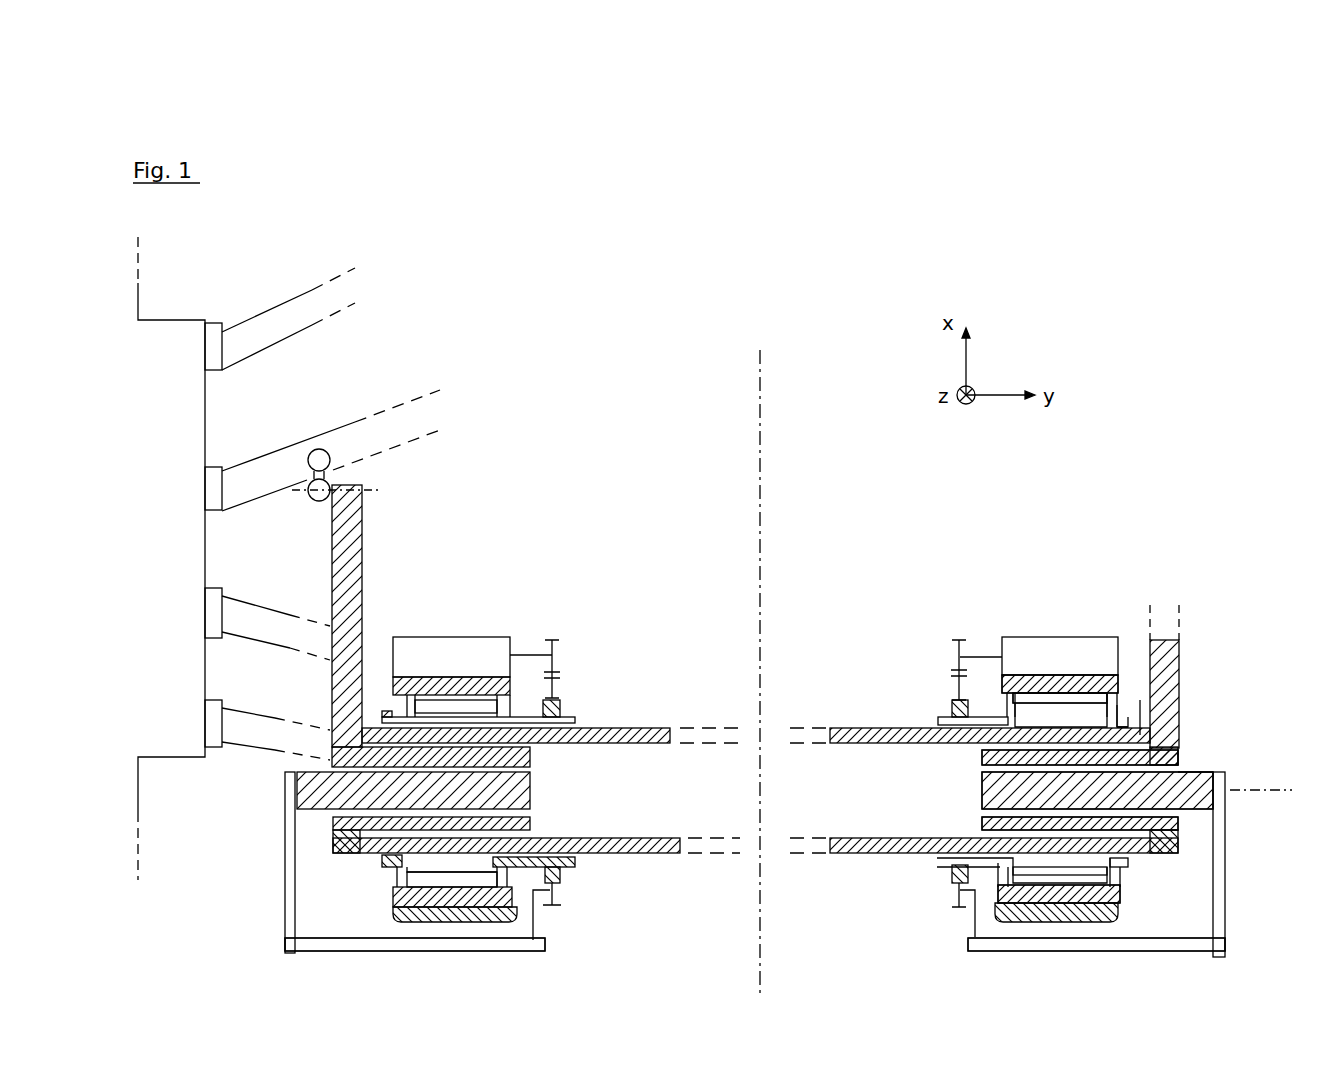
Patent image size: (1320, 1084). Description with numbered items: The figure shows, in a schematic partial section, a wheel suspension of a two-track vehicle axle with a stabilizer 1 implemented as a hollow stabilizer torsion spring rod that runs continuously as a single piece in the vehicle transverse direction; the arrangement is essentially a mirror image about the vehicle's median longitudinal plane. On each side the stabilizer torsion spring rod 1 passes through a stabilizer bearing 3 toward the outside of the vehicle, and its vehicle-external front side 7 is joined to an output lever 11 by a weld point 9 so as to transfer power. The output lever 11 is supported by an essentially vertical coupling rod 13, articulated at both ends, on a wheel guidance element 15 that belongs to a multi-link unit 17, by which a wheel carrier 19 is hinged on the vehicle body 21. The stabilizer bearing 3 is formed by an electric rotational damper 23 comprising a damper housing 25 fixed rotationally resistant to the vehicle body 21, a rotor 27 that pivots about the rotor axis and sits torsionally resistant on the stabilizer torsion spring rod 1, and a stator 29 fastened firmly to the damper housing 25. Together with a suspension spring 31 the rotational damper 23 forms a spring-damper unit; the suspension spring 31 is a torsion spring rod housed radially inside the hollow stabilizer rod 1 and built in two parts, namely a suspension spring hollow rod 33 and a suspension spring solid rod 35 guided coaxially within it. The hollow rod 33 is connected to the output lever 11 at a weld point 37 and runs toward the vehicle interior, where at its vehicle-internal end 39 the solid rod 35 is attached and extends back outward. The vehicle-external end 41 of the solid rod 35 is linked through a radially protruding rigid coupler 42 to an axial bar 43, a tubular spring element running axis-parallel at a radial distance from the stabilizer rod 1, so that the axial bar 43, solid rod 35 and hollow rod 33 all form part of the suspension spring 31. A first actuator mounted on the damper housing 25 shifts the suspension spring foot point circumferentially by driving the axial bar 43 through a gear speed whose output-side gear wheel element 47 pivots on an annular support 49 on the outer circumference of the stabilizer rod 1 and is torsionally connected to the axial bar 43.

The stabilizer 1 is at (597, 728).
The stabilizer bearing 3 is at (455, 922).
The front side external to the vehicle 7 is at (1136, 726).
The weld point 9 is at (1149, 732).
The output lever 11 is at (365, 543).
The coupling rod 13 is at (332, 467).
The wheel guidance element 15 is at (282, 450).
The multi-link unit 17 is at (448, 250).
The wheel carrier 19 is at (178, 320).
The vehicle body 21 is at (1112, 906).
The electric rotational damper 23 is at (1135, 606).
The damper housing 25 is at (1033, 684).
The rotor 27 is at (1082, 725).
The stator 29 is at (1057, 703).
The suspension spring 31 is at (937, 747).
The suspension spring hollow rod 33 is at (1000, 760).
The suspension spring solid rod 35 is at (982, 812).
The weld point 37 is at (1168, 752).
The vehicle-internal end 39 is at (992, 767).
The vehicle-external end 41 is at (1205, 773).
The coupler 42 is at (285, 852).
The axial bar 43 is at (500, 951).
The output-side gear wheel element 47 is at (958, 896).
The annular support 49 is at (952, 874).